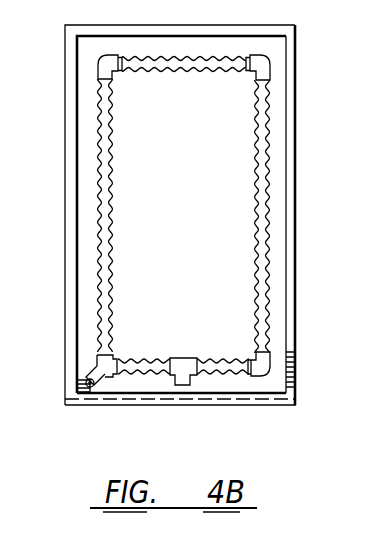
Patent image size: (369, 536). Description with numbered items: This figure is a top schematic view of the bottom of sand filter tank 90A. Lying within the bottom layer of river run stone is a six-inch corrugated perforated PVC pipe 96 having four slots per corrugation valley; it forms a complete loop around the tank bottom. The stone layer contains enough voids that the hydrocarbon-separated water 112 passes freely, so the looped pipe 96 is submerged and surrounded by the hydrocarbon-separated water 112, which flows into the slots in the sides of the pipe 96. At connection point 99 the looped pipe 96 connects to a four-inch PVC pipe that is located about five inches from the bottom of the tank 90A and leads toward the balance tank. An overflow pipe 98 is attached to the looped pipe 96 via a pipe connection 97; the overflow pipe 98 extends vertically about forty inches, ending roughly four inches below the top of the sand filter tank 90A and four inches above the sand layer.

The sand filter tank 90A is at (65, 214).
The hydrocarbon-separated water 112 is at (213, 170).
The corrugated perforated PVC pipe 96 is at (270, 252).
The pipe connection 97 is at (83, 381).
The overflow pipe 98 is at (93, 388).
The connection point 99 is at (186, 381).